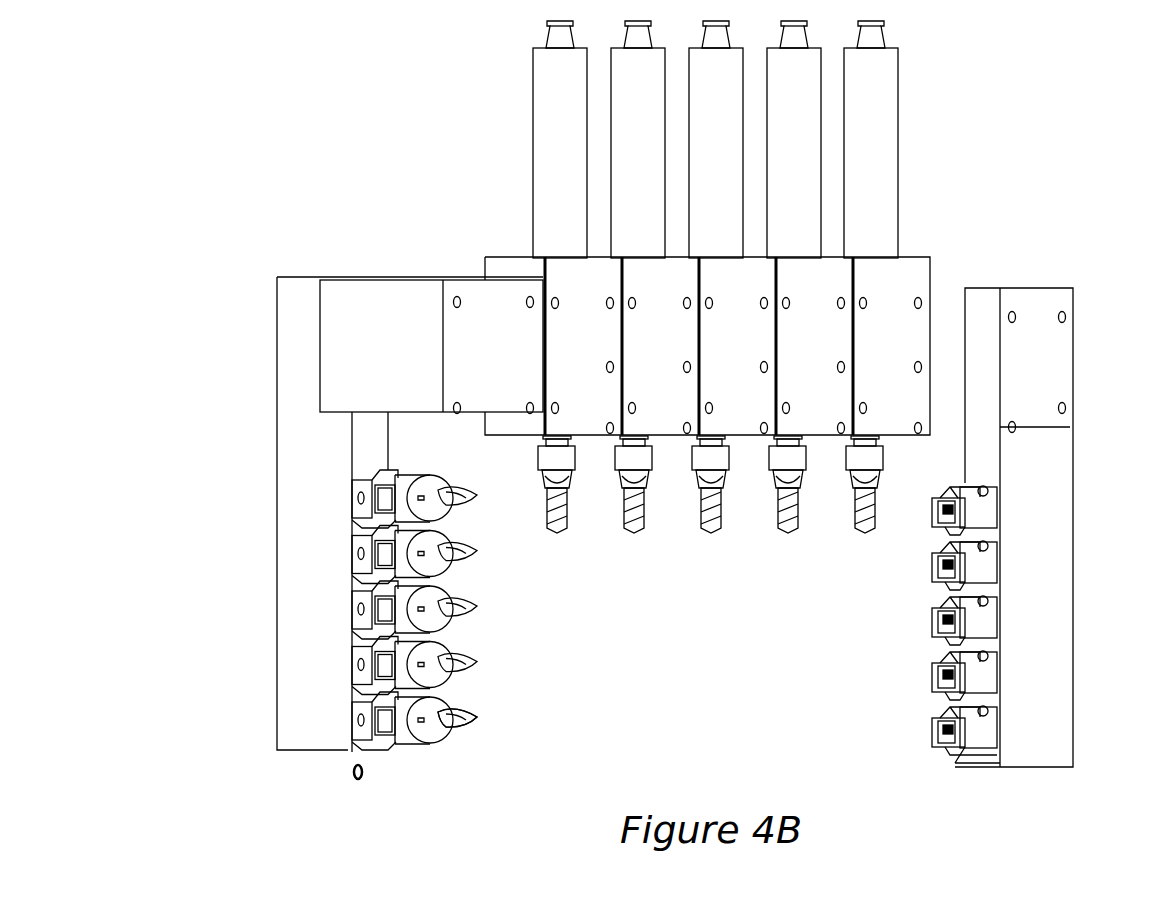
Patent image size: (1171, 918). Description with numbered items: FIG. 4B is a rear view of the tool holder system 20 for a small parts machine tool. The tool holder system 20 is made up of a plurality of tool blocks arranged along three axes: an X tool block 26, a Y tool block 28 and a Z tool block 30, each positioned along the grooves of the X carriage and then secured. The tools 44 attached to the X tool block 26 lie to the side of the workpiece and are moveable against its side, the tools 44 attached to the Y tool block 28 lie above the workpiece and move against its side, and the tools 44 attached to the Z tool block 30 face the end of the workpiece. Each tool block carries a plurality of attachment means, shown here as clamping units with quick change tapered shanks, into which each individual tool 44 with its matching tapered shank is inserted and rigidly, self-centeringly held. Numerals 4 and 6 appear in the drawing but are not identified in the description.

The tool holder system 20 is at (388, 188).
The Y tool block 28 is at (917, 273).
The Z tool block 30 is at (286, 548).
The X tool block 26 is at (1068, 408).
The cutter unit 4 is at (382, 752).
The tool 44 is at (470, 727).
The cutter stack 6 is at (447, 666).